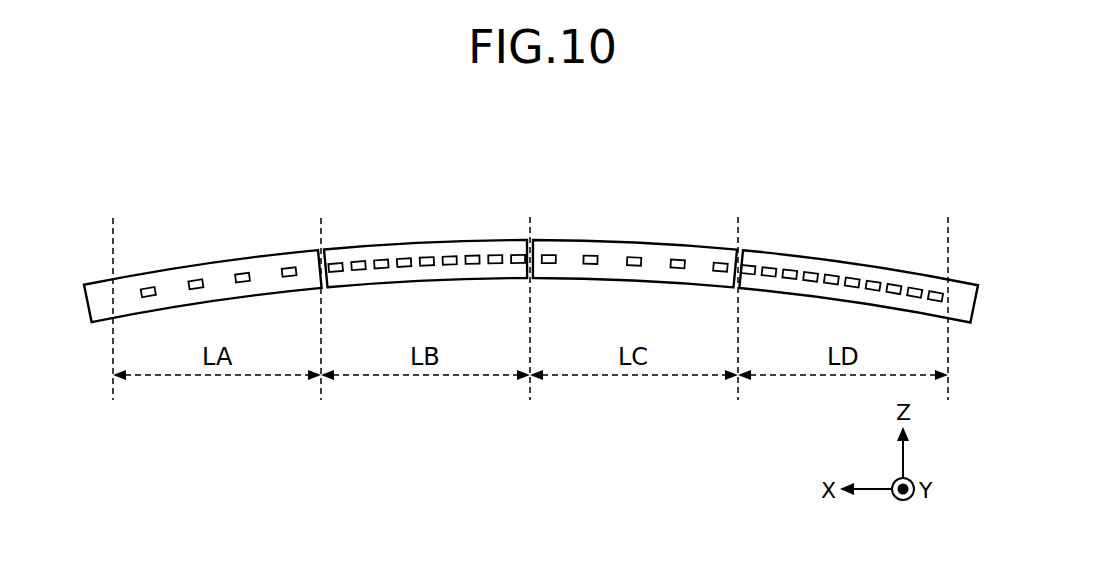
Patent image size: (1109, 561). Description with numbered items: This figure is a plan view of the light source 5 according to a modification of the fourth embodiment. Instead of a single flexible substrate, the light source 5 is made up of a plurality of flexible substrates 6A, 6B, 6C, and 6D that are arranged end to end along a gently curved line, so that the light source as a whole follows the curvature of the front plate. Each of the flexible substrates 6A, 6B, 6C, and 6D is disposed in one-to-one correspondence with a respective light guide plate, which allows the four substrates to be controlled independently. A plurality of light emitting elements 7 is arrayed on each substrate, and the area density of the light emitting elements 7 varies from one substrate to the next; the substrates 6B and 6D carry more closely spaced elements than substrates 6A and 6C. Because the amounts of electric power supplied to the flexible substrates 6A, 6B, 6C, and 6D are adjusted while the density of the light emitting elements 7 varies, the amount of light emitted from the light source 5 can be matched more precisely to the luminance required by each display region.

The light source 5 is at (856, 195).
The flexible substrate 6A is at (99, 290).
The flexible substrate 6B is at (363, 247).
The flexible substrate 6C is at (613, 248).
The flexible substrate 6D is at (961, 290).
The light emitting element 7 is at (290, 272).